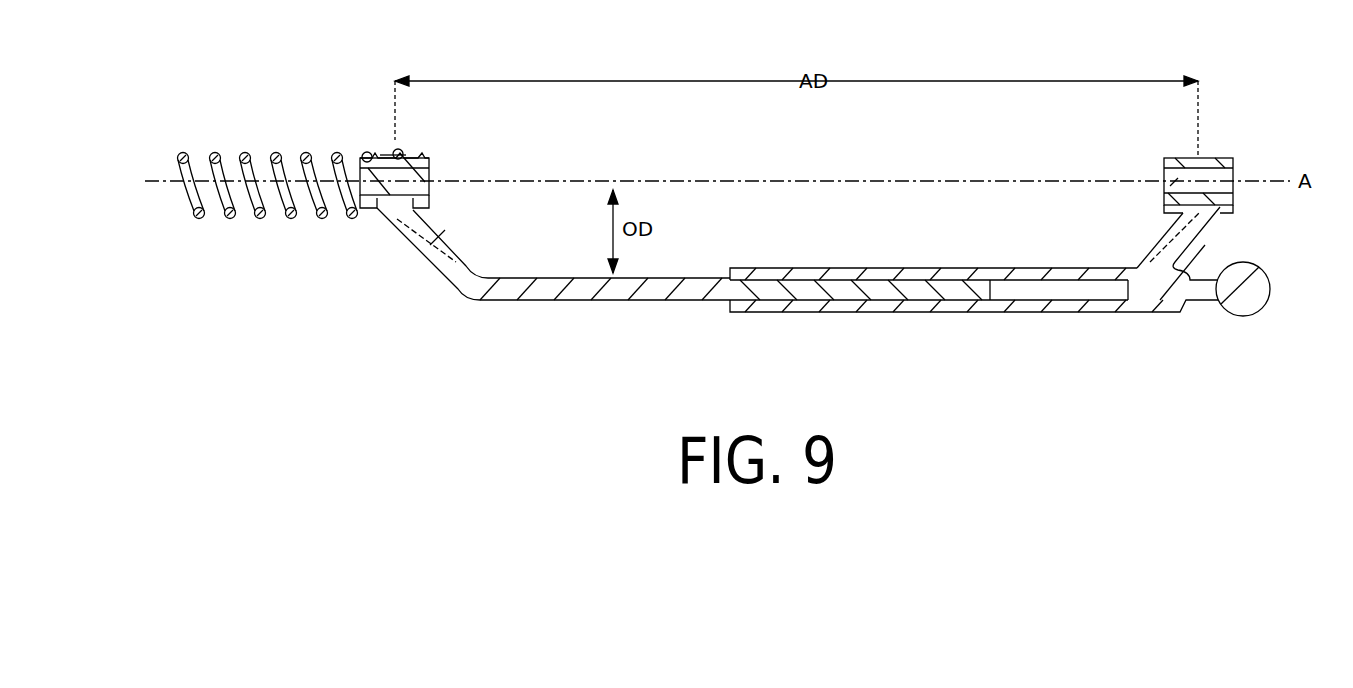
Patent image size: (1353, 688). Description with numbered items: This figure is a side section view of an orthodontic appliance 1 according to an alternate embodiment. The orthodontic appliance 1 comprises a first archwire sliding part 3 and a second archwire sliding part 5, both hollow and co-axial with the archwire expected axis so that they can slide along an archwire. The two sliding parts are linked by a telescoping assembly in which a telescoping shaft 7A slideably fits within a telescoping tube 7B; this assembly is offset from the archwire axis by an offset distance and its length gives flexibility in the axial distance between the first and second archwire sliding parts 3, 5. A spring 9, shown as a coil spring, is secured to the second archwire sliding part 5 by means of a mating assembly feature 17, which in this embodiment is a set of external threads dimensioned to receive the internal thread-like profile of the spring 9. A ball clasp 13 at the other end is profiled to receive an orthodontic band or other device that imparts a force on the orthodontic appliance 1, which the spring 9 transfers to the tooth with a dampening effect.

The orthodontic appliance 1 is at (164, 83).
The first archwire sliding part 3 is at (1170, 183).
The second archwire sliding part 5 is at (429, 164).
The telescoping shaft 7A is at (552, 301).
The telescoping tube 7B is at (918, 312).
The spring 9 is at (262, 219).
The ball clasp 13 is at (1238, 318).
The mating assembly feature 17 is at (417, 177).